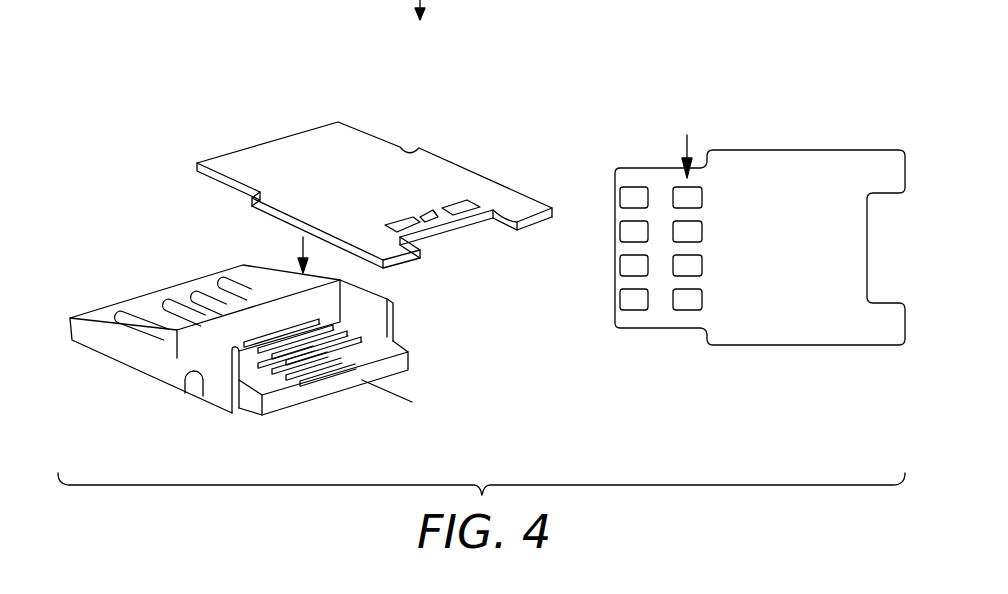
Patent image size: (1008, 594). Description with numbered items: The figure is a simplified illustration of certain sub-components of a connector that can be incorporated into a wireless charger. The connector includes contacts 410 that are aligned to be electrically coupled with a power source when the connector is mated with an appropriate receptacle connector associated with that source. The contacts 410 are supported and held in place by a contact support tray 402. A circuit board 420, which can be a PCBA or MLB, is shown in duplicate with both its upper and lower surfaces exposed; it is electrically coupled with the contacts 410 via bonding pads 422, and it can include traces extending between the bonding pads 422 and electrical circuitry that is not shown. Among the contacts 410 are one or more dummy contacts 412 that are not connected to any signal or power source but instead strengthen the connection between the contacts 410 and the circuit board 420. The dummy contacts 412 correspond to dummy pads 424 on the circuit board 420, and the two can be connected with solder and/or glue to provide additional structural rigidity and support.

The contact support tray 402 is at (158, 370).
The contacts 410 is at (132, 318).
The dummy contacts 412 is at (363, 353).
The circuit board 420 is at (237, 162).
The bonding pads 422 is at (633, 198).
The dummy pads 424 is at (692, 295).